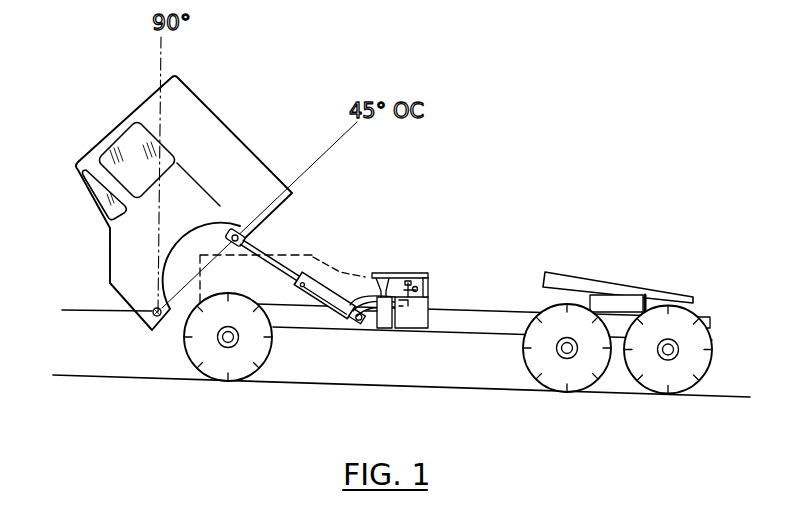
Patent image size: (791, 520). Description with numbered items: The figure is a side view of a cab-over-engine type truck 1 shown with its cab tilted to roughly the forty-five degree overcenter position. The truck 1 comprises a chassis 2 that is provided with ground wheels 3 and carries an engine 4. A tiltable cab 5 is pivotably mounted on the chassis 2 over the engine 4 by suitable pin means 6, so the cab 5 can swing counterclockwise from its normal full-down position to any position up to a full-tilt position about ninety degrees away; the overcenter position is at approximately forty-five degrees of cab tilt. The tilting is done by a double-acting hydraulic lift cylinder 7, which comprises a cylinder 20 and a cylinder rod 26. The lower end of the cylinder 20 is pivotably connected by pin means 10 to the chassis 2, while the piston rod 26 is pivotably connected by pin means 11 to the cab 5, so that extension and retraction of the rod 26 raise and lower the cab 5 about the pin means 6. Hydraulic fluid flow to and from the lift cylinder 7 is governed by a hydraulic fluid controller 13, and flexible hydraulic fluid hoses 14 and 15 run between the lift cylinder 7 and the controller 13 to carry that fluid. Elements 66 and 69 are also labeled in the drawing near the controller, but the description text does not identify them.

The truck 1 is at (443, 197).
The chassis 2 is at (293, 328).
The ground wheels 3 is at (273, 360).
The engine 4 is at (315, 256).
The tiltable cab 5 is at (110, 248).
The pin means 6 is at (150, 318).
The lift cylinder 7 is at (335, 288).
The pin means 10 is at (359, 322).
The pin means 11 is at (236, 233).
The hydraulic fluid controller 13 is at (428, 300).
The flexible hydraulic fluid hose 14 is at (376, 325).
The flexible hydraulic fluid hose 15 is at (396, 296).
The cylinder 20 is at (321, 277).
The cylinder rod 26 is at (258, 242).
The control valve 66 is at (378, 273).
The release valve 69 is at (417, 287).